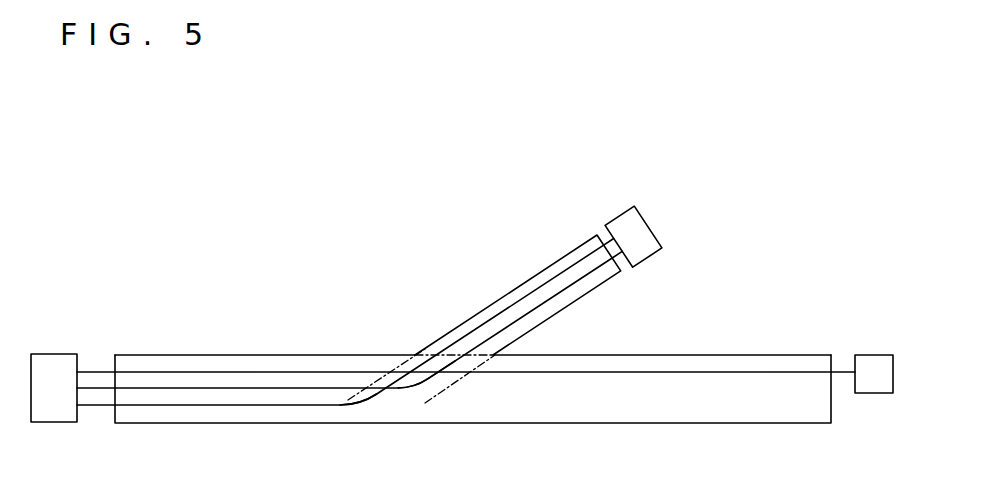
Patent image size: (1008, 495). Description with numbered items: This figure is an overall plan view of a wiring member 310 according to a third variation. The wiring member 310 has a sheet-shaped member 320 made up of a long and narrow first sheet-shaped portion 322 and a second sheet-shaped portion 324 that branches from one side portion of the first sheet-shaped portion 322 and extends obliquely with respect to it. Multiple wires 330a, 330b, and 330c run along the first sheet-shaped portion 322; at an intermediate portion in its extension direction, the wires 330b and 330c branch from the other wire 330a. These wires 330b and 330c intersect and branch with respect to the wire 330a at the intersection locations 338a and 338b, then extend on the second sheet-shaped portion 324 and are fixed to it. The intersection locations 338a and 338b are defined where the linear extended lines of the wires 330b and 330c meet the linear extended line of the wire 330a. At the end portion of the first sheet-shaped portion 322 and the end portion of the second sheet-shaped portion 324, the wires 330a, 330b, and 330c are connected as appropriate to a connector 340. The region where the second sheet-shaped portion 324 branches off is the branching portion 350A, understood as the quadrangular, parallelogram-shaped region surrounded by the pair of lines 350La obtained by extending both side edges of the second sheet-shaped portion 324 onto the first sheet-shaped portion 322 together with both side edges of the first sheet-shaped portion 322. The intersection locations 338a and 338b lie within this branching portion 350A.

The wiring member 310 is at (280, 289).
The sheet-shaped member 320 is at (240, 351).
The first sheet-shaped portion 322 is at (318, 354).
The second sheet-shaped portion 324 is at (556, 262).
The wire 330a is at (137, 371).
The wire 330b is at (176, 390).
The wire 330c is at (252, 407).
The intersection location 338a is at (440, 373).
The intersection location 338b is at (404, 389).
The connector 340 is at (54, 353).
The branching portion 350A is at (368, 403).
The line 350La is at (398, 370).